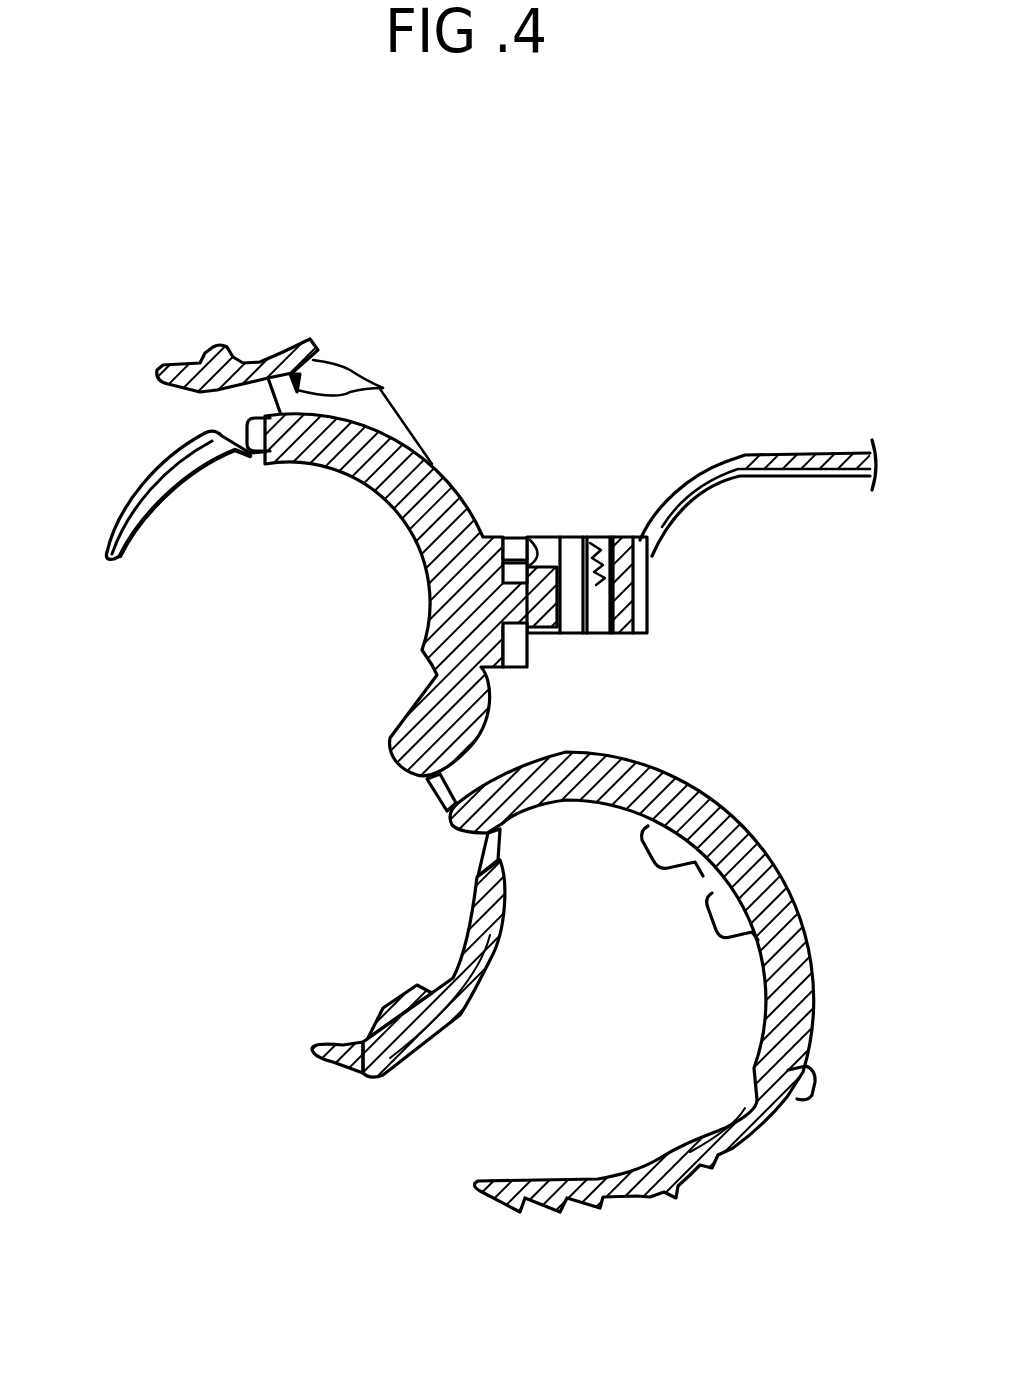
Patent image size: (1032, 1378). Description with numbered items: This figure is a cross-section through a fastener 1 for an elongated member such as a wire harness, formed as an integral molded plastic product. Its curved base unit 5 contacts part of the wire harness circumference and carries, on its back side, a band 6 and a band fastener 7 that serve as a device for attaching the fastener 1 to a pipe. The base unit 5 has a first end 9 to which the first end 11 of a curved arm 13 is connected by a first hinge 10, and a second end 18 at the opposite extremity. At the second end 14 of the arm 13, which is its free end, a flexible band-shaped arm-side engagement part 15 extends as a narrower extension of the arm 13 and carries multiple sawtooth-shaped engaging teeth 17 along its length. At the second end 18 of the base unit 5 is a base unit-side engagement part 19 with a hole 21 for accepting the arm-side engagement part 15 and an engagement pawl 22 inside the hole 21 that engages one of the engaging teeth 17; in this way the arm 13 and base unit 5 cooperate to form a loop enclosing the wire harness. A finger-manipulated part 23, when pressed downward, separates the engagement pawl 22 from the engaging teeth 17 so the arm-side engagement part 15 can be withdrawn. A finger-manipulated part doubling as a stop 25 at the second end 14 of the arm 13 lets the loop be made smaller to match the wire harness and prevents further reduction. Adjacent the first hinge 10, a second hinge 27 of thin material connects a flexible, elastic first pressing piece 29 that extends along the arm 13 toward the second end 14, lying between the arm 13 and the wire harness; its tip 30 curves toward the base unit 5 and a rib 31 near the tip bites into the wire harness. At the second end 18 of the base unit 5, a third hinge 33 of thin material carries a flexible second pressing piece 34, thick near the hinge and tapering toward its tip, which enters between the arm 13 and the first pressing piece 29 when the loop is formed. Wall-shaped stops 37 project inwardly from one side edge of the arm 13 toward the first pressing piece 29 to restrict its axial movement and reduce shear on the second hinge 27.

The fastener 1 is at (215, 1110).
The base unit 5 is at (437, 482).
The band 6 is at (845, 478).
The band fastener 7 is at (627, 632).
The first end of the base unit 9 is at (393, 732).
The first hinge 10 is at (432, 792).
The first end of the arm 11 is at (460, 834).
The arm 13 is at (812, 953).
The second end of the arm 14 is at (785, 1100).
The arm-side engagement part 15 is at (560, 1182).
The engaging teeth 17 is at (642, 1206).
The second end of the base unit 18 is at (307, 455).
The base unit-side engagement part 19 is at (244, 356).
The hole 21 is at (385, 388).
The engagement pawl 22 is at (338, 368).
The finger-manipulated part 23 is at (162, 368).
The stop 25 is at (815, 1093).
The second hinge 27 is at (505, 833).
The first pressing piece 29 is at (490, 950).
The tip of the first pressing piece 30 is at (315, 1046).
The rib 31 is at (398, 1001).
The third hinge 33 is at (243, 440).
The second pressing piece 34 is at (130, 505).
The stops 37 is at (667, 858).